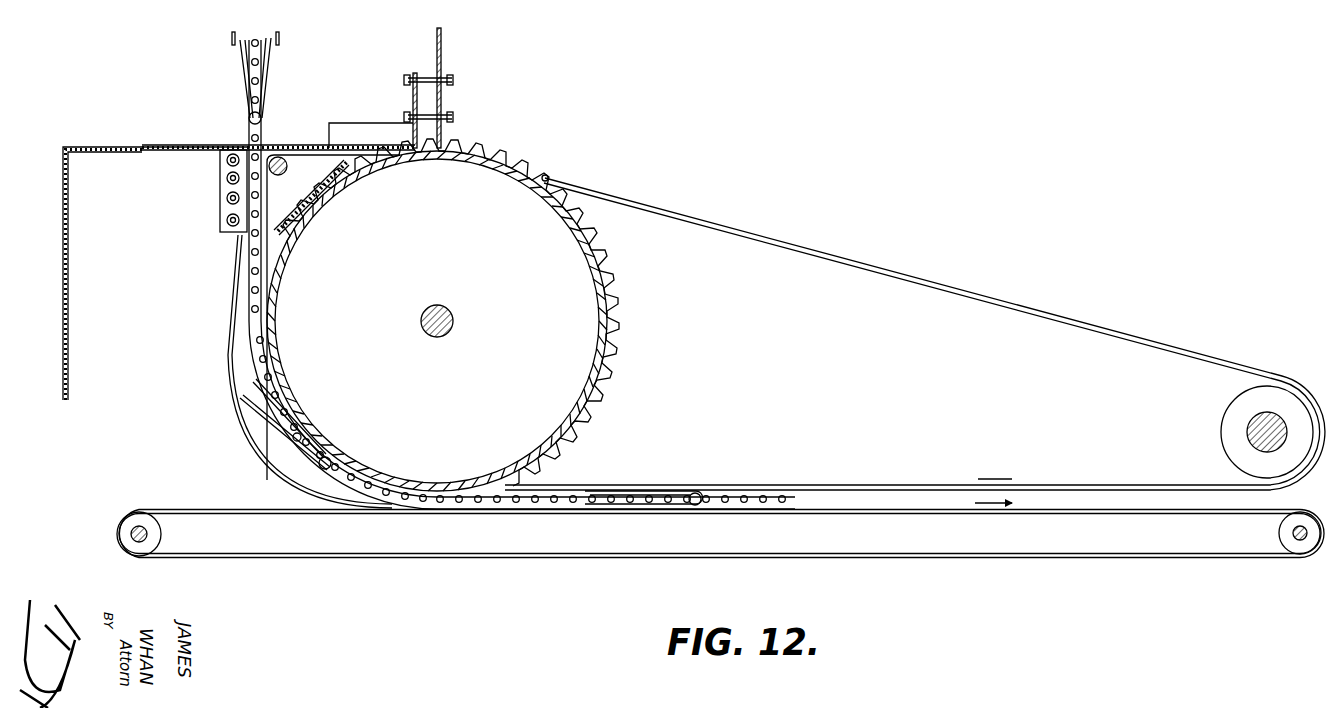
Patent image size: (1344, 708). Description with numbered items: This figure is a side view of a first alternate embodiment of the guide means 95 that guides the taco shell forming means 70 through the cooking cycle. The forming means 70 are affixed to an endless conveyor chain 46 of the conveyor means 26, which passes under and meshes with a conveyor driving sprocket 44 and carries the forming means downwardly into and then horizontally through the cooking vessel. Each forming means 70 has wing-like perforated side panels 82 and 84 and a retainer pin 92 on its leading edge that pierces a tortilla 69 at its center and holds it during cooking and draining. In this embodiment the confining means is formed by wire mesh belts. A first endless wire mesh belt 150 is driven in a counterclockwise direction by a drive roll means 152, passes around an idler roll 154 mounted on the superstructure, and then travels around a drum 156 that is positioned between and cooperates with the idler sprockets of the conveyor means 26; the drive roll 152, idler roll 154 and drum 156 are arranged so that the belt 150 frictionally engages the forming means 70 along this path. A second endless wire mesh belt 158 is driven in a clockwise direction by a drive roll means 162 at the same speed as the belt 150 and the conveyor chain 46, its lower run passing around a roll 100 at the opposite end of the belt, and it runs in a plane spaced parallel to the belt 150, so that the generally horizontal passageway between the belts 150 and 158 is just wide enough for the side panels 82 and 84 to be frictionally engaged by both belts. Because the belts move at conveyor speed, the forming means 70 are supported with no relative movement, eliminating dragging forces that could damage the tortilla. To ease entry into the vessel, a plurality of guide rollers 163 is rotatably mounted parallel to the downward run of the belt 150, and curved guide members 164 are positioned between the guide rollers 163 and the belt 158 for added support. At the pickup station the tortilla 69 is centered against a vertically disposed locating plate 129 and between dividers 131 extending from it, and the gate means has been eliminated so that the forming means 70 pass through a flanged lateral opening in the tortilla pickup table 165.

The conveyor means 26 is at (262, 136).
The conveyor driving sprocket 44 is at (566, 460).
The conveyor chain 46 is at (253, 40).
The tortilla 69 is at (182, 145).
The taco shell forming means 70 is at (266, 76).
The side panel 82 is at (243, 62).
The side panel 84 is at (272, 62).
The retainer pin 92 is at (250, 116).
The guide means 95 is at (242, 437).
The conveyor pulley 100 is at (150, 535).
The locating plate 129 is at (416, 75).
The divider 131 is at (378, 128).
The first endless wire mesh belt 150 is at (612, 200).
The drive roll means 152 is at (1233, 419).
The idler roll 154 is at (283, 161).
The drum 156 is at (562, 246).
The second endless wire mesh belt 158 is at (205, 508).
The drive roll means 162 is at (1295, 542).
The guide roller 163 is at (227, 196).
The curved guide member 164 is at (234, 333).
The tortilla pickup table 165 is at (107, 146).